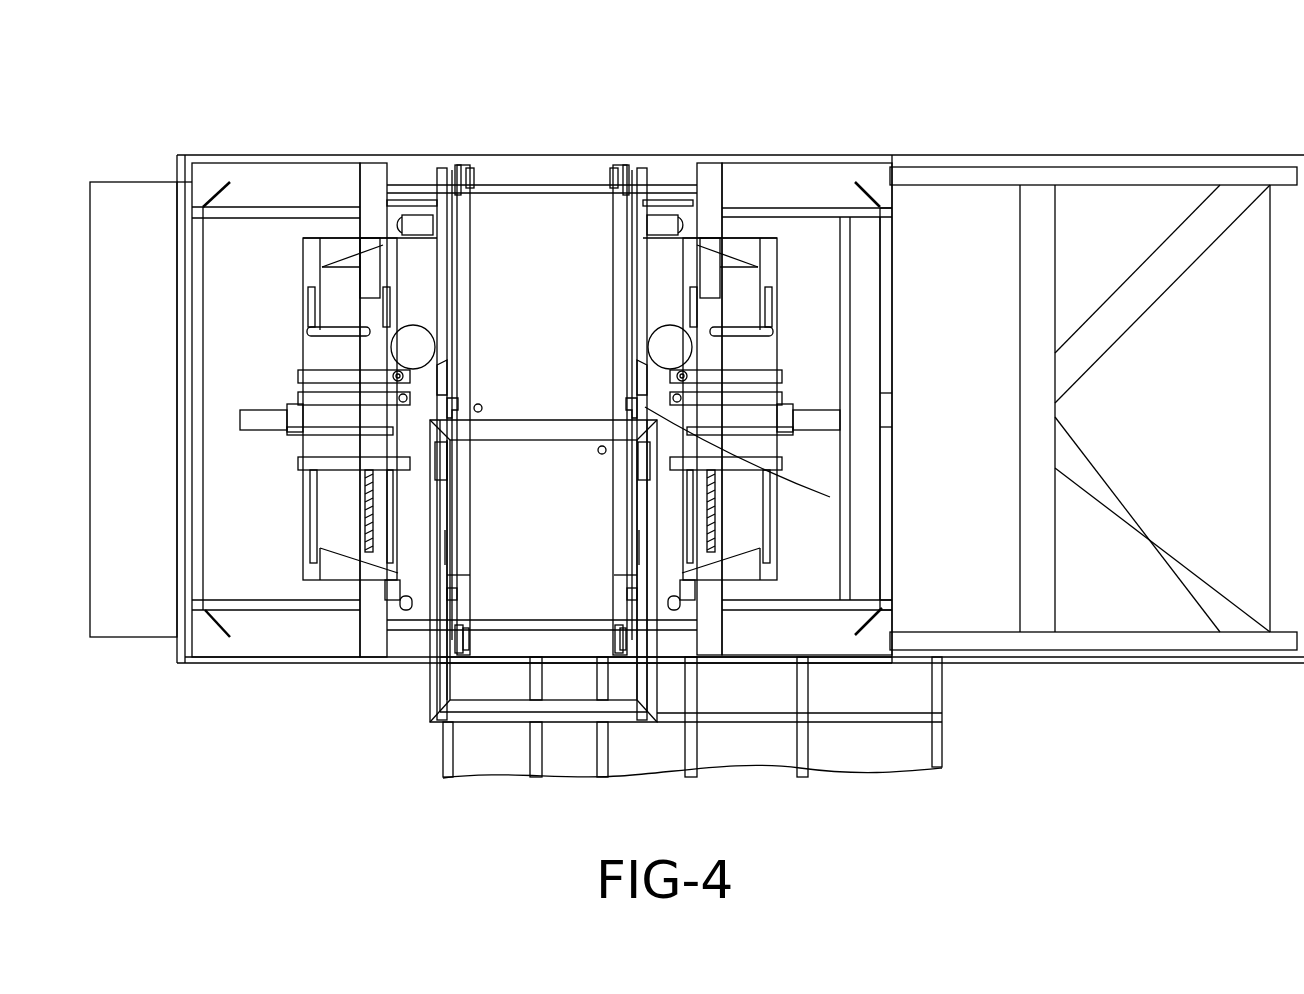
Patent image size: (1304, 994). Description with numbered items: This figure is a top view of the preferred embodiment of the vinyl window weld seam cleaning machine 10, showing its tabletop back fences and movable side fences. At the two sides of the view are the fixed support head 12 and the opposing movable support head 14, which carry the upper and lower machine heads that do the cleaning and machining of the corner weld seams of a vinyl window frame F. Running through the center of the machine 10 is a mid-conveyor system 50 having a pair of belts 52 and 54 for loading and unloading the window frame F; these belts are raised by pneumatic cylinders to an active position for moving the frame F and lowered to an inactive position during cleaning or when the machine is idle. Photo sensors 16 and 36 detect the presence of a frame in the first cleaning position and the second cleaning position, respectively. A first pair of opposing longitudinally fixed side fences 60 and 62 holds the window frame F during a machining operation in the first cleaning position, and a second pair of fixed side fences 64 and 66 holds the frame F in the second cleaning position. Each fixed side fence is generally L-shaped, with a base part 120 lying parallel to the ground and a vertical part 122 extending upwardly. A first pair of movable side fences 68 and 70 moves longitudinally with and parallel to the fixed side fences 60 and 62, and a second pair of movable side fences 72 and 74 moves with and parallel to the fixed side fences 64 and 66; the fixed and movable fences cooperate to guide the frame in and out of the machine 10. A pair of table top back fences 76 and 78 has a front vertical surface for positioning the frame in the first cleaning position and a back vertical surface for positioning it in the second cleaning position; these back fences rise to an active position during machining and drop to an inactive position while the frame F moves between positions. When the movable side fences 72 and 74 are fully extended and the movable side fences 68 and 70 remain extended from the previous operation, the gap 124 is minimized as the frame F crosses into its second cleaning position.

The vinyl window weld seam cleaning machine 10 is at (118, 146).
The fixed support head 12 is at (232, 157).
The movable support head 14 is at (810, 157).
The photo sensor 16 is at (599, 452).
The photo sensor 36 is at (482, 408).
The mid-conveyor system 50 is at (470, 618).
The belt 52 is at (455, 570).
The belt 54 is at (620, 570).
The fixed side fence 60 is at (447, 552).
The fixed side fence 62 is at (637, 552).
The fixed side fence 64 is at (445, 277).
The fixed side fence 66 is at (638, 275).
The movable side fence 68 is at (445, 472).
The movable side fence 70 is at (640, 472).
The movable side fence 72 is at (437, 365).
The movable side fence 74 is at (647, 365).
The table top back fence 76 is at (452, 402).
The table top back fence 78 is at (628, 413).
The base part 120 is at (447, 520).
The vertical part 122 is at (440, 508).
The gap 124 is at (830, 497).
The window frame F is at (428, 688).